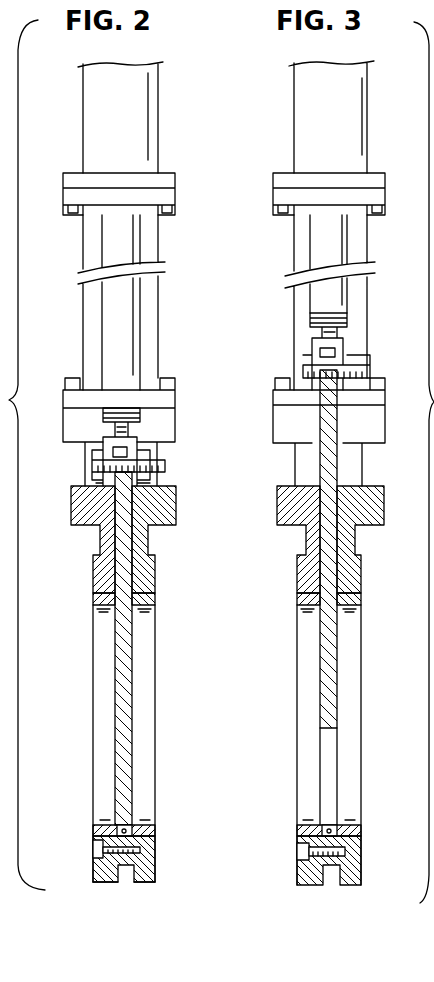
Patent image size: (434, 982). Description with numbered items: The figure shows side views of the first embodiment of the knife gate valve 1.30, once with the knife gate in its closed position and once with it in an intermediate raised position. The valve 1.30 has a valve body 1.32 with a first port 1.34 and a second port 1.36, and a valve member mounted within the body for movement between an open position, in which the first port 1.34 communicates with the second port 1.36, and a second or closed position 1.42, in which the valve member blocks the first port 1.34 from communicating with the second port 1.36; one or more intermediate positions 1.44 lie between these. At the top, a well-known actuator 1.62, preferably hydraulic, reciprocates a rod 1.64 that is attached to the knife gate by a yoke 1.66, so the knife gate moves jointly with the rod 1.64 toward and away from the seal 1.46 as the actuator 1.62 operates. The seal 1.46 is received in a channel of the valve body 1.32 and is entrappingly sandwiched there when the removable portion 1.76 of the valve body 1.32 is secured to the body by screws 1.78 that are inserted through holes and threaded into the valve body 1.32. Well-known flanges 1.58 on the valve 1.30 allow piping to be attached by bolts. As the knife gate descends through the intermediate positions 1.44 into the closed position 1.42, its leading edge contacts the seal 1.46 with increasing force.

In FIG. 2, the actuator 1.62 is at (136, 129).
In FIG. 3, the actuator 1.62 is at (312, 133).
In FIG. 2, the rod 1.64 is at (120, 328).
In FIG. 3, the rod 1.64 is at (333, 285).
In FIG. 2, the yoke 1.66 is at (133, 450).
In FIG. 3, the yoke 1.66 is at (314, 345).
In FIG. 2, the valve body 1.32 is at (170, 505).
In FIG. 3, the valve body 1.32 is at (290, 487).
In FIG. 2, the valve 1.30 is at (163, 586).
In FIG. 3, the valve 1.30 is at (276, 518).
In FIG. 2, the first port 1.34 is at (75, 632).
In FIG. 3, the first port 1.34 is at (290, 622).
In FIG. 2, the second port 1.36 is at (162, 637).
In FIG. 3, the second port 1.36 is at (366, 612).
In FIG. 2, the second (closed) position 1.42 is at (142, 807).
In FIG. 3, the intermediate position 1.44 is at (345, 712).
In FIG. 2, the seal 1.46 is at (107, 810).
In FIG. 3, the seal 1.46 is at (330, 808).
In FIG. 2, the screws 1.78 is at (93, 848).
In FIG. 2, the removable portion 1.76 is at (108, 866).
In FIG. 2, the flanges 1.58 is at (88, 880).